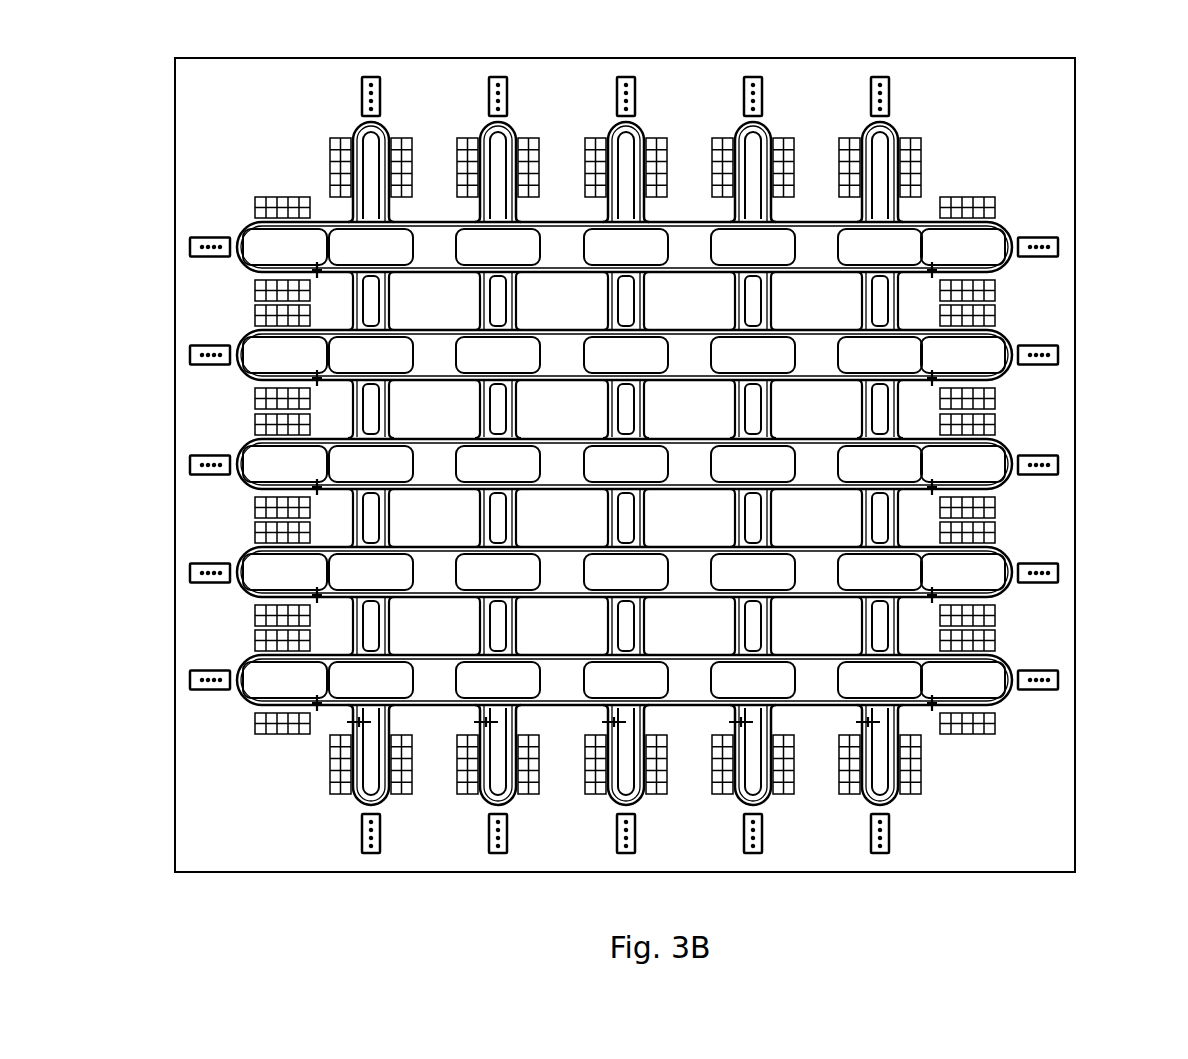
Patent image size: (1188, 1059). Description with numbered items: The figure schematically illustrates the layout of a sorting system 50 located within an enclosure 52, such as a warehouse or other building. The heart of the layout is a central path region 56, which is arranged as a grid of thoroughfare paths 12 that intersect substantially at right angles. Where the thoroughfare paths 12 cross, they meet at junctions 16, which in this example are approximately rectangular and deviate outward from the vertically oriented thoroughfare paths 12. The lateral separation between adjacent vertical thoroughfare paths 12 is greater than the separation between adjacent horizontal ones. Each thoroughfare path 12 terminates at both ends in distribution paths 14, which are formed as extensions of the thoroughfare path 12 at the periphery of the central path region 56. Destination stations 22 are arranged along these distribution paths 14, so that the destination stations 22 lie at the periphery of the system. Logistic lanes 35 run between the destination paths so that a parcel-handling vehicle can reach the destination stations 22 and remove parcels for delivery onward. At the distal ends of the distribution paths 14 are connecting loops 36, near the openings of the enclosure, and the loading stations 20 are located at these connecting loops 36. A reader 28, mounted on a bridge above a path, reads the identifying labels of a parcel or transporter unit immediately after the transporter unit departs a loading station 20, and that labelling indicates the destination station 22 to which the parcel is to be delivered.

The sorting system 50 is at (166, 116).
The enclosure 52 is at (172, 210).
The central path region 56 is at (360, 315).
The junctions 16 is at (463, 600).
The thoroughfare paths 12 is at (770, 530).
The logistic lanes 35 is at (812, 163).
The connecting loops 36 is at (245, 266).
The distribution paths 14 is at (455, 160).
The loading stations 20 is at (205, 562).
The destination stations 22 is at (990, 403).
The reader 28 is at (957, 590).